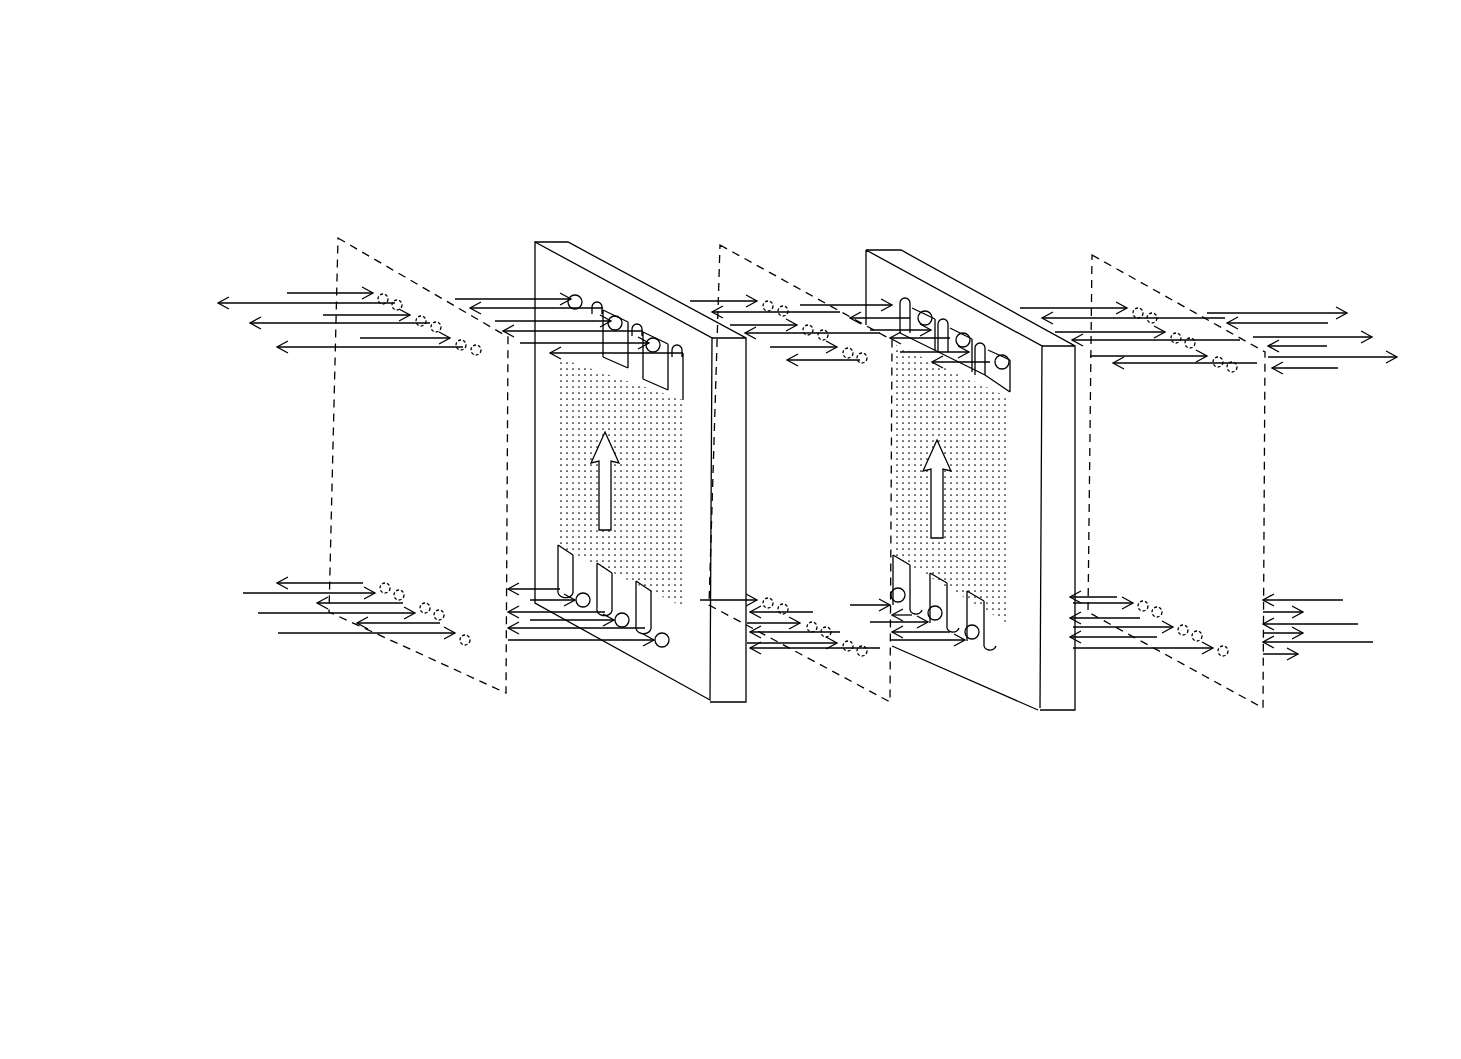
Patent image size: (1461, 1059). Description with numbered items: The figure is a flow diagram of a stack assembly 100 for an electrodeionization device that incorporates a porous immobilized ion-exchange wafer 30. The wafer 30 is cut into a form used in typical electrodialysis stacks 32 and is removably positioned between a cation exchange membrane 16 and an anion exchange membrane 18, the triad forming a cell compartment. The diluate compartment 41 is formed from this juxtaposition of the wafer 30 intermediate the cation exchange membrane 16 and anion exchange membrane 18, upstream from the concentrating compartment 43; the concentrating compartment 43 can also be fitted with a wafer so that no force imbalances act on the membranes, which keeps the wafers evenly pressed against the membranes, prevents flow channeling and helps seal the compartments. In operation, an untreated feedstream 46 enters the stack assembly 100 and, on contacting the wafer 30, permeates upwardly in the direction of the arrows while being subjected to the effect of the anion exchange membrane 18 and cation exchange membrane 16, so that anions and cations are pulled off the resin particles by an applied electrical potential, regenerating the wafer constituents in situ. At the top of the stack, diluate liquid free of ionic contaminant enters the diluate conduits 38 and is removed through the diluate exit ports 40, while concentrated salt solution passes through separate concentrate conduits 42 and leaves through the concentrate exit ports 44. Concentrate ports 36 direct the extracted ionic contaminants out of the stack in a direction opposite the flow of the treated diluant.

The stack assembly 100 is at (932, 55).
The concentrating compartment 43 is at (567, 230).
The diluate compartment 41 is at (988, 228).
The concentrate conduits 42 is at (672, 345).
The diluate conduits 38 is at (905, 296).
The concentrate exit ports 44 is at (290, 348).
The untreated feedstream 46 is at (423, 617).
The diluate exit ports 40 is at (1327, 323).
The concentrate ports 36 is at (1318, 640).
The anion exchange membrane 18 is at (411, 474).
The cation exchange membrane 16 is at (880, 675).
The wafer 30 is at (660, 479).
The electrodialysis stacks 32 is at (805, 476).